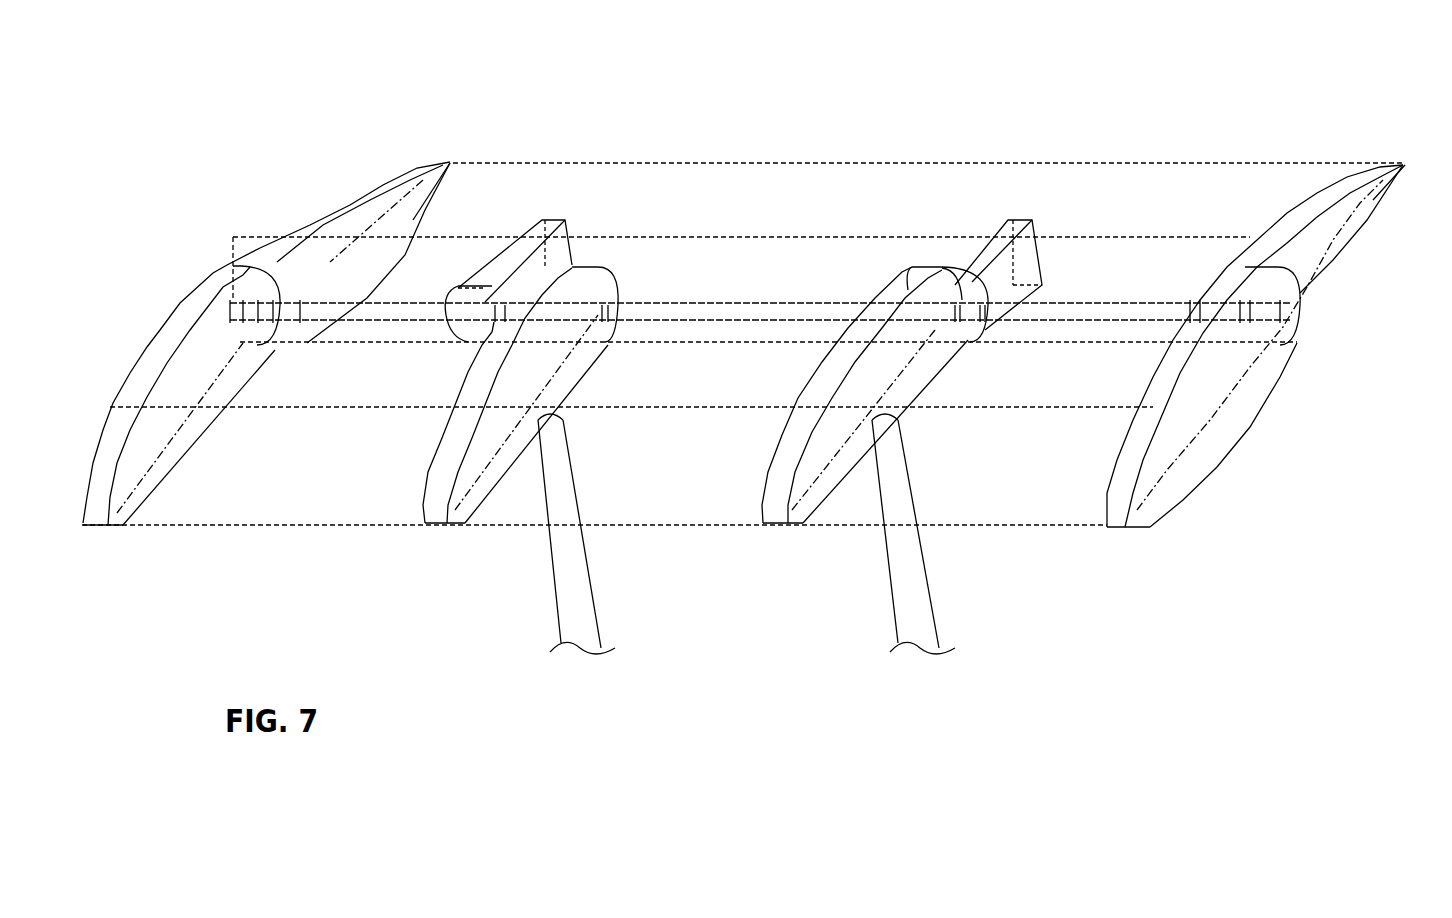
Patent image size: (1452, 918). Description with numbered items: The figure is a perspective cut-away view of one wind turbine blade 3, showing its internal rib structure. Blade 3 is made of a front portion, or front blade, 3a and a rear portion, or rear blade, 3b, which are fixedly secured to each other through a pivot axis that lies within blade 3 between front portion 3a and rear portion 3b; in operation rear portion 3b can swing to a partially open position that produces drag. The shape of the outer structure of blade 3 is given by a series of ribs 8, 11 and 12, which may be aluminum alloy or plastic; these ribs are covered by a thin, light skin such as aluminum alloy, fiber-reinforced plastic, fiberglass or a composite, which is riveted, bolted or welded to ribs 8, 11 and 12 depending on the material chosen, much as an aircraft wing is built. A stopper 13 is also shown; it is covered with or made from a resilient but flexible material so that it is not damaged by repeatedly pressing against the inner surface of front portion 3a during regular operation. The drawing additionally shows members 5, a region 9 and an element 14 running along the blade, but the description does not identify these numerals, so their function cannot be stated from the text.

The blade 3 is at (832, 105).
The front portion 3a is at (1258, 470).
The rear portion 3b is at (322, 153).
The support strut 5 is at (580, 597).
The rib 8 is at (140, 493).
The rotor envelope 9 is at (1035, 505).
The rib 11 is at (417, 200).
The rib 12 is at (562, 258).
The stopper 13 is at (935, 267).
The shaft 14 is at (748, 312).